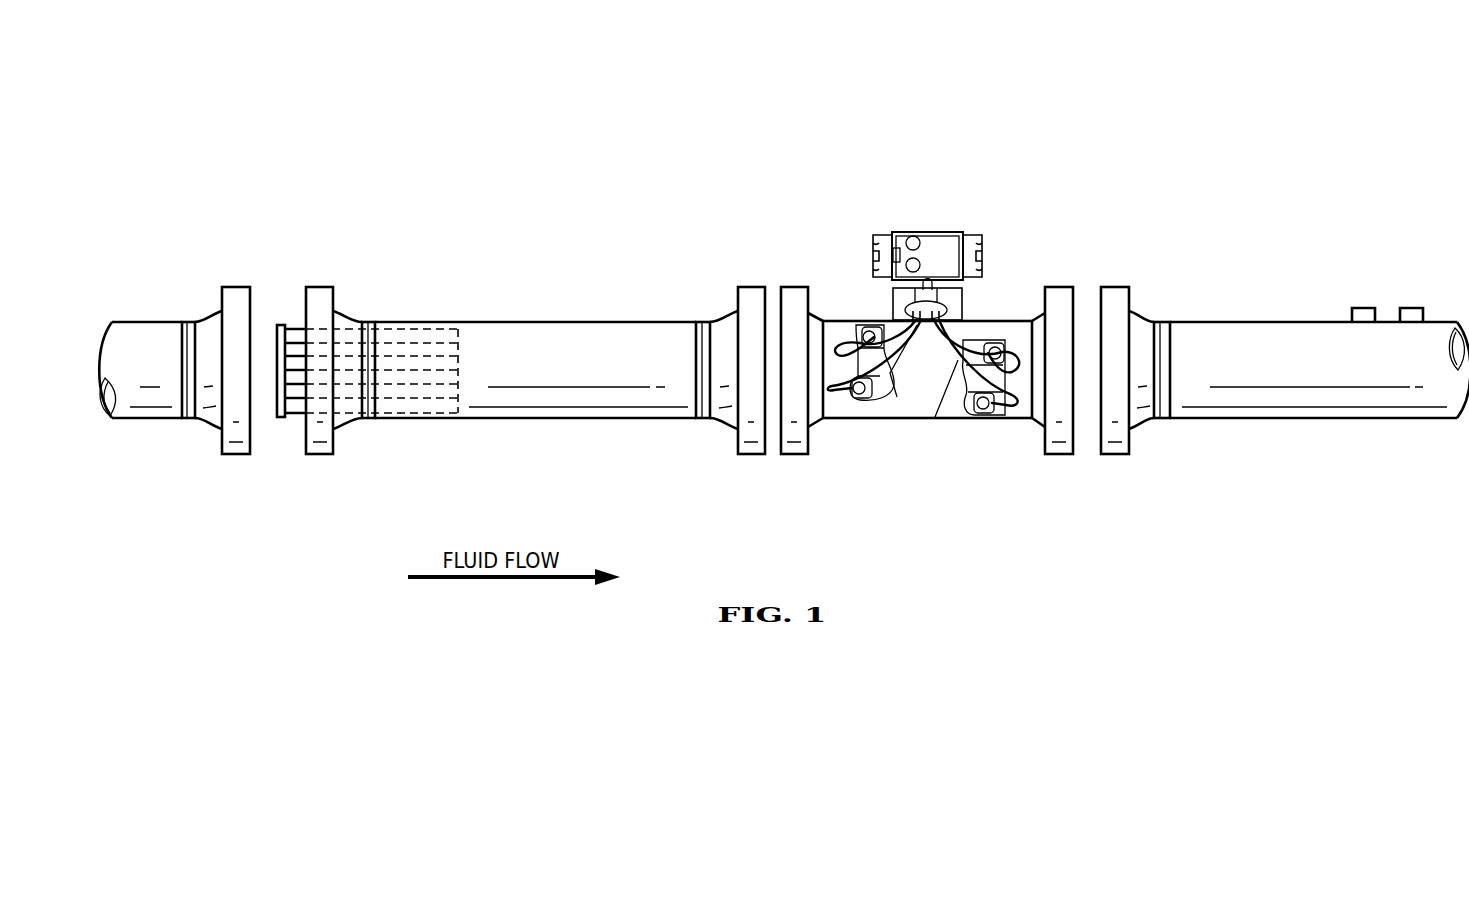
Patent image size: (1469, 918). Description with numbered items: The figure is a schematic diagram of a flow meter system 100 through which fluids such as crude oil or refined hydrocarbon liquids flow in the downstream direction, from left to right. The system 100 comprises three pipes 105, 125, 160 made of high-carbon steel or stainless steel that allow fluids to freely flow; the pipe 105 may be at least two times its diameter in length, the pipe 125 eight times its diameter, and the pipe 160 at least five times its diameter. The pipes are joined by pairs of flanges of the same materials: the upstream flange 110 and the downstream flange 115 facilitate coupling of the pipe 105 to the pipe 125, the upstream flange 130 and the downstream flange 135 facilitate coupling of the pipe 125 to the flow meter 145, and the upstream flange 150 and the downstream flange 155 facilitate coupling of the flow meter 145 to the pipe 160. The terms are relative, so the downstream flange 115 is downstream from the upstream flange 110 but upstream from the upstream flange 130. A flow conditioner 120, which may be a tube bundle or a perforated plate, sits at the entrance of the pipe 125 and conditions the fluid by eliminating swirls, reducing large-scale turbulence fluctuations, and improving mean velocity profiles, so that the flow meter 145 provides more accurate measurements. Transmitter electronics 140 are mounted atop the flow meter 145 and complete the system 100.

The flow meter system 100 is at (460, 124).
The pipe 105 is at (145, 320).
The upstream flange 110 is at (236, 287).
The downstream flange 115 is at (320, 454).
The flow conditioner 120 is at (418, 322).
The pipe 125 is at (565, 322).
The upstream flange 130 is at (752, 287).
The downstream flange 135 is at (793, 454).
The transmitter electronics 140 is at (930, 232).
The flow meter 145 is at (932, 432).
The upstream flange 150 is at (1062, 454).
The downstream flange 155 is at (1116, 287).
The pipe 160 is at (1268, 322).